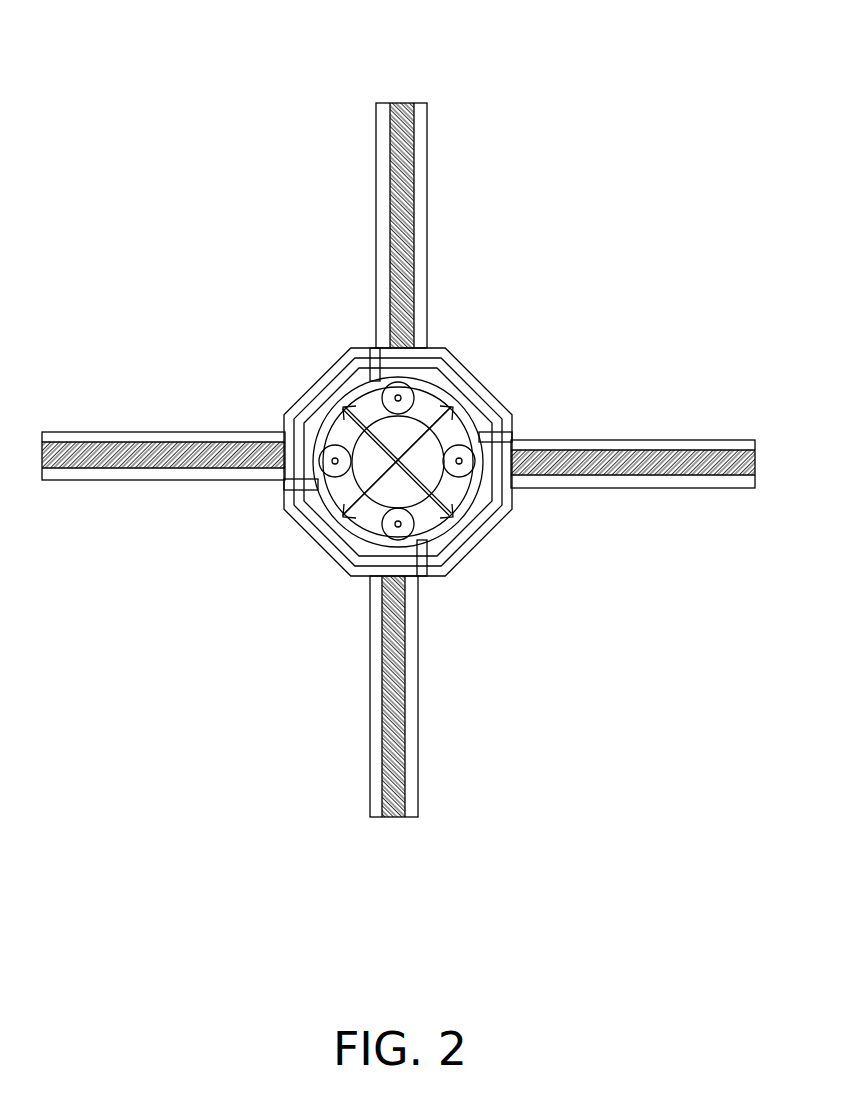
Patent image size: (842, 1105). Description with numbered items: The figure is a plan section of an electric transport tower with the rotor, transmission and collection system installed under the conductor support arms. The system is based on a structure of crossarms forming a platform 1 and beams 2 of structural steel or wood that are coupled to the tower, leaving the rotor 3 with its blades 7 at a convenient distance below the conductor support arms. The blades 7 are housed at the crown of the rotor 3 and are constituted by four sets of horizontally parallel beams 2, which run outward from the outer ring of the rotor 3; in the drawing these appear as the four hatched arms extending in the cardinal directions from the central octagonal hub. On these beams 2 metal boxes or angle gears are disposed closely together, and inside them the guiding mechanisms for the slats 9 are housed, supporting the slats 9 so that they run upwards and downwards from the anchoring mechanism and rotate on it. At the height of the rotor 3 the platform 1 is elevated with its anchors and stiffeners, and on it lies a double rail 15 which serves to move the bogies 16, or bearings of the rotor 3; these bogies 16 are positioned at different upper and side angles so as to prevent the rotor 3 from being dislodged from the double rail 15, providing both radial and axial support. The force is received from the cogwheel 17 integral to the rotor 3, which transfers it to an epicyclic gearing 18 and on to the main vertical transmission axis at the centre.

The platform 1 is at (345, 415).
The beams 2 is at (424, 106).
The rotor 3 is at (460, 370).
The blades 7 is at (383, 661).
The slats 9 is at (405, 770).
The double rail 15 is at (480, 426).
The bogies 16 is at (430, 555).
The cogwheel 17 is at (323, 502).
The epicyclic gearing 18 is at (345, 568).